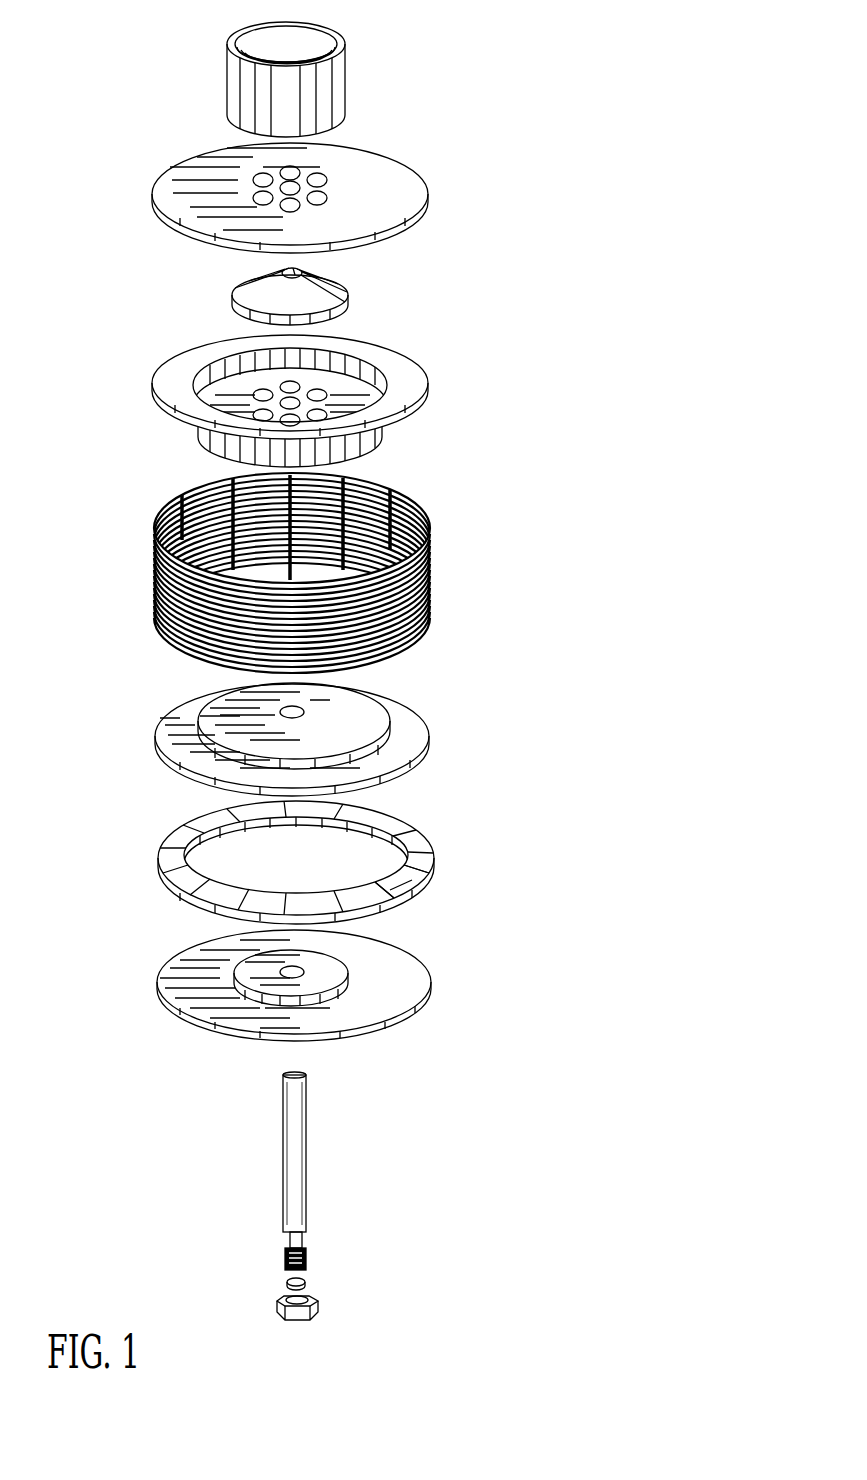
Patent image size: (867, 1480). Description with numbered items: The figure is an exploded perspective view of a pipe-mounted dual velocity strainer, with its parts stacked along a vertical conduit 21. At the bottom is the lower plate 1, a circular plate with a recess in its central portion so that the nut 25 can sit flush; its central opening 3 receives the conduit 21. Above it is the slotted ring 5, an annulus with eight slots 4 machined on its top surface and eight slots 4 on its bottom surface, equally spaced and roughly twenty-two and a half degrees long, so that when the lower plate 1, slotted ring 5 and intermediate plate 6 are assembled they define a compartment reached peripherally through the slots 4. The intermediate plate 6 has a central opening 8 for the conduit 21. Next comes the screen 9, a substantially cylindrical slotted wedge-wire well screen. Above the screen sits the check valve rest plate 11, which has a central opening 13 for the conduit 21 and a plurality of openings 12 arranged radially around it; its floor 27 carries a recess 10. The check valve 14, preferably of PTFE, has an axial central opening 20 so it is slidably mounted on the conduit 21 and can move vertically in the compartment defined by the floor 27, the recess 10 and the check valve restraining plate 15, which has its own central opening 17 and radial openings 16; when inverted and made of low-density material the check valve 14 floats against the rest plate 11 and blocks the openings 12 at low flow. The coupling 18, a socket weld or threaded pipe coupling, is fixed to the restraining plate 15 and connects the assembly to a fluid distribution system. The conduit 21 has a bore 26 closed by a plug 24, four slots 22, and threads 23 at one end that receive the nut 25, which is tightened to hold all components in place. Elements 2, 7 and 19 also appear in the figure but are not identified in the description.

The lower plate 1 is at (413, 1025).
The spacer disc 2 is at (350, 986).
The central opening 3 is at (305, 970).
The slots 4 is at (388, 893).
The slotted ring 5 is at (403, 823).
The intermediate plate 6 is at (427, 755).
The disc 7 is at (390, 715).
The central opening 8 is at (302, 705).
The screen 9 is at (430, 583).
The recess 10 is at (377, 443).
The check valve rest plate 11 is at (423, 400).
The openings 12 is at (327, 405).
The central opening 13 is at (290, 398).
The check valve 14 is at (350, 283).
The check valve restraining plate 15 is at (420, 190).
The openings 16 is at (323, 193).
The central opening 17 is at (300, 180).
The coupling 18 is at (345, 52).
The threads 19 is at (258, 42).
The axial central opening 20 is at (288, 273).
The conduit 21 is at (308, 1123).
The slots 22 is at (302, 1238).
The threads 23 is at (308, 1257).
The plug 24 is at (307, 1282).
The nut 25 is at (282, 1323).
The bore 26 is at (297, 1072).
The floor 27 is at (217, 400).